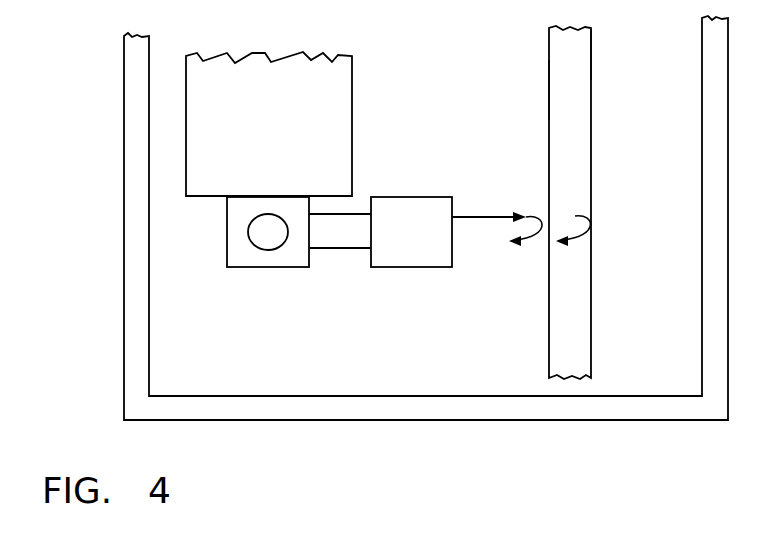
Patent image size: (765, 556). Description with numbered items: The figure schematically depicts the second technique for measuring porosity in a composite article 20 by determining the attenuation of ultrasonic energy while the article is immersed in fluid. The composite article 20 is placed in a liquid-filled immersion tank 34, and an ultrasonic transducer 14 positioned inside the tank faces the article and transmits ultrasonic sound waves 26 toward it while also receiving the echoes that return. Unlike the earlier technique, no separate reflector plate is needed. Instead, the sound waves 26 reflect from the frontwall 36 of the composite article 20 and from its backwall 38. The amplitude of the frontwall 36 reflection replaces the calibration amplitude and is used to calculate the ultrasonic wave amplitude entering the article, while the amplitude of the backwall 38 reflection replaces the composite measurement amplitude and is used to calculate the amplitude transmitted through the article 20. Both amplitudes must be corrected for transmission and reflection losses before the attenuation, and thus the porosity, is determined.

The ultrasonic transducer 14 is at (422, 258).
The composite article 20 is at (591, 162).
The ultrasonic sound waves 26 is at (501, 215).
The immersion tank 34 is at (419, 420).
The frontwall 36 is at (548, 83).
The backwall 38 is at (591, 50).